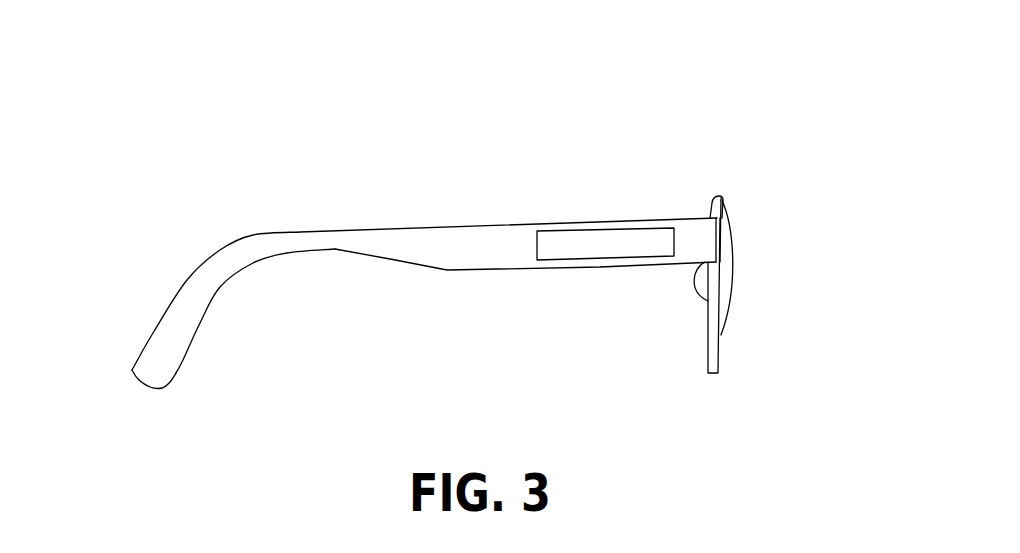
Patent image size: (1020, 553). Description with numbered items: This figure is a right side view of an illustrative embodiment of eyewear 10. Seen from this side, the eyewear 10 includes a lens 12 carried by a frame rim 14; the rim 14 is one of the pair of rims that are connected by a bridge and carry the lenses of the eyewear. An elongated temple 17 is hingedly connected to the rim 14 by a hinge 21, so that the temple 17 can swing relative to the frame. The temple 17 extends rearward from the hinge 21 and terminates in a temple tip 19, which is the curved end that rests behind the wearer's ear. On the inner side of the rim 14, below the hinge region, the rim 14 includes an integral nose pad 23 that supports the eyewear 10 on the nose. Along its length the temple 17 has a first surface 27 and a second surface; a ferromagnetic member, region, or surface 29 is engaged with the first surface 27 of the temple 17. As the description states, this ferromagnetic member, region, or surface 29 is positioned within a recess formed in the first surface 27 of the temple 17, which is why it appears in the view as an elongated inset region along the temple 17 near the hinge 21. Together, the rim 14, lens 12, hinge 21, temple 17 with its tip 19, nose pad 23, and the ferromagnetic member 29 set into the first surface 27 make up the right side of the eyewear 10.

The eyewear 10 is at (735, 105).
The lens 12 is at (731, 318).
The rim 14 is at (713, 197).
The temple 17 is at (333, 246).
The temple tip 19 is at (142, 385).
The hinge 21 is at (726, 203).
The nose pad 23 is at (695, 281).
The first surface 27 is at (480, 248).
The ferromagnetic member, region, or surface 29 is at (588, 250).